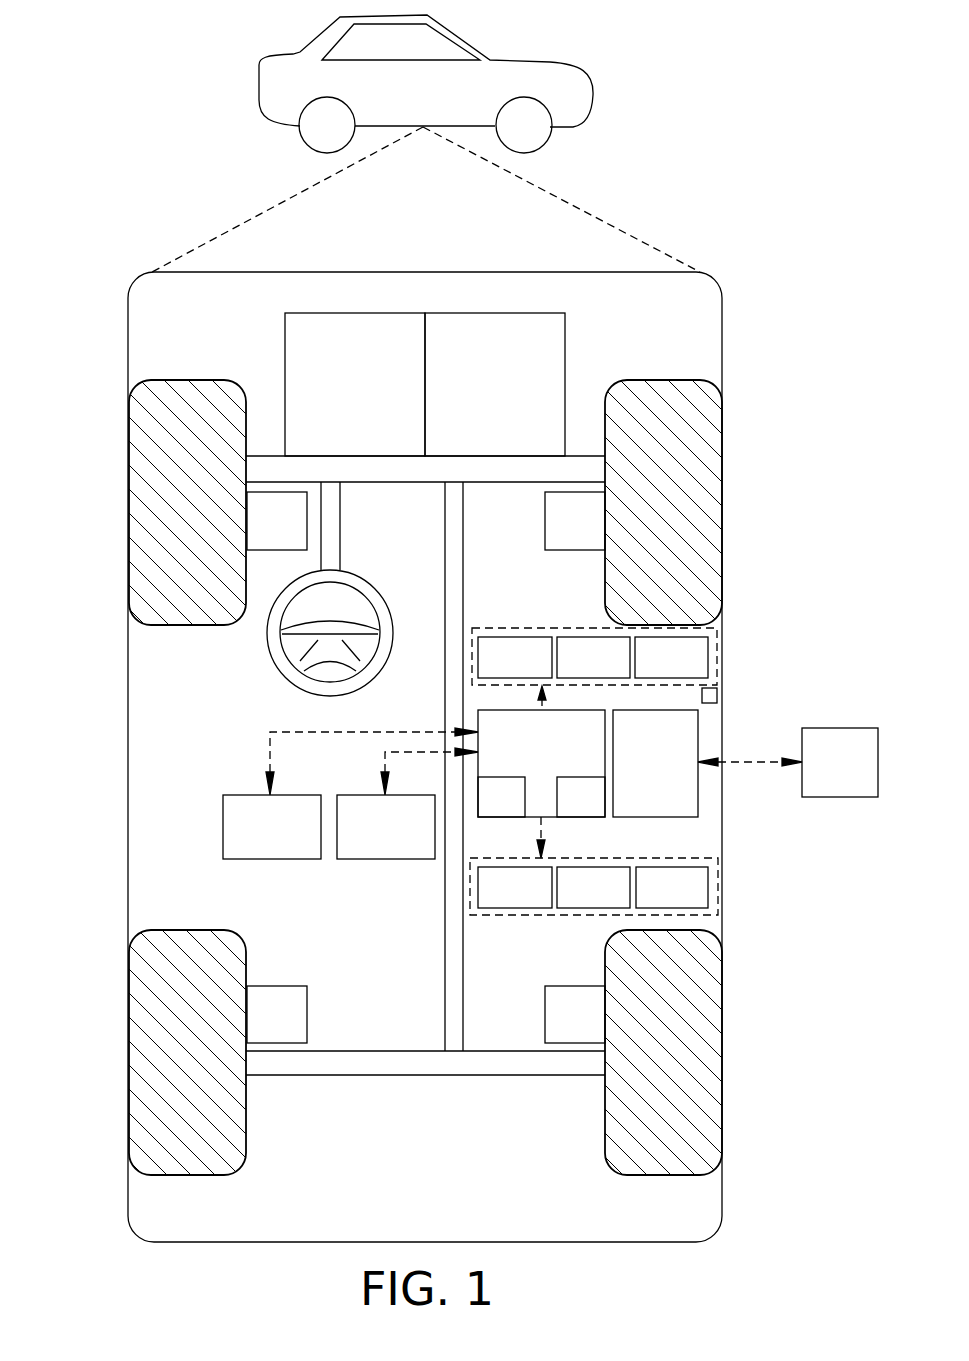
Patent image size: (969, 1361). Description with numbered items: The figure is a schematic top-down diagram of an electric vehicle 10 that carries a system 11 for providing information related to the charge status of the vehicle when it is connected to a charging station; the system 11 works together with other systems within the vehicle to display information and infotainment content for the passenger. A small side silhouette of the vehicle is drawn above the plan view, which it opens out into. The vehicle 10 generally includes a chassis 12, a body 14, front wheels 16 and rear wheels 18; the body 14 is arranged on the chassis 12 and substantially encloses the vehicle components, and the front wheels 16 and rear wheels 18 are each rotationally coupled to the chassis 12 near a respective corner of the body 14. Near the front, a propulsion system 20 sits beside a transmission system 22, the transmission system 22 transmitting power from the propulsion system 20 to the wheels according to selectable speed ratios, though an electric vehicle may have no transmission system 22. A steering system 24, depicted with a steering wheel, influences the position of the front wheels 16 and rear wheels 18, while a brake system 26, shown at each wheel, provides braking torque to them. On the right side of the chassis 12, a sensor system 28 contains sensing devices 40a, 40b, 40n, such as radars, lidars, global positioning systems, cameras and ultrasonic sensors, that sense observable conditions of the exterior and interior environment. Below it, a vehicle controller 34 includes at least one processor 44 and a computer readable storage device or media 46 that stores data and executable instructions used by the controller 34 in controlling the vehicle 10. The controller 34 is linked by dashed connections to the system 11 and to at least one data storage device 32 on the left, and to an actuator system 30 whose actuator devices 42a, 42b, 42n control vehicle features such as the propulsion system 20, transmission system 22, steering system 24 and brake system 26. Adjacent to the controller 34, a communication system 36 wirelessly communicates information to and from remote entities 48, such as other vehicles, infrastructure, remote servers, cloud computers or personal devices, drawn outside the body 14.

The electric vehicle 10 is at (411, 103).
The system 11 is at (258, 841).
The chassis 12 is at (443, 958).
The body 14 is at (129, 755).
The front wheels 16 is at (188, 380).
The rear wheels 18 is at (187, 1175).
The propulsion system 20 is at (339, 398).
The transmission system 22 is at (481, 398).
The steering system 24 is at (356, 516).
The brake system 26 is at (263, 534).
The sensor system 28 is at (594, 633).
The actuator system 30 is at (594, 910).
The data storage device 32 is at (372, 841).
The vehicle controller 34 is at (541, 763).
The communication system 36 is at (641, 776).
The sensing device 40a is at (494, 671).
The sensing device 40b is at (572, 671).
The sensing device 40n is at (650, 671).
The actuator device 42a is at (494, 901).
The actuator device 42b is at (572, 901).
The actuator device 42n is at (651, 901).
The processor 44 is at (488, 811).
The computer readable storage device or media 46 is at (567, 811).
The remote entities 48 is at (826, 777).